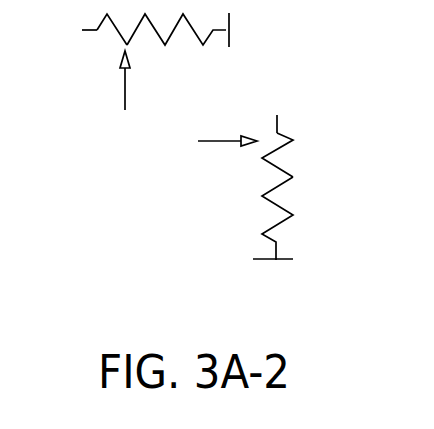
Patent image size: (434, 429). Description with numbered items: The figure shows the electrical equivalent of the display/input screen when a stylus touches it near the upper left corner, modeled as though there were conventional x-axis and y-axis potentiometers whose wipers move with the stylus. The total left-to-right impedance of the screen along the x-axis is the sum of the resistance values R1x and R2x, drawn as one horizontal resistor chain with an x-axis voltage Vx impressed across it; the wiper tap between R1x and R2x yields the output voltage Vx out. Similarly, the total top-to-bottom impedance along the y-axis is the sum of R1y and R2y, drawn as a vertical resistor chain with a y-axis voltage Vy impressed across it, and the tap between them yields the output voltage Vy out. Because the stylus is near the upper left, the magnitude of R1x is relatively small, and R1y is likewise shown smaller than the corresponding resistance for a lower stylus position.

The x-axis voltage Vx is at (74, 31).
The x-axis resistance R1x is at (97, 44).
The x-axis resistance R2x is at (178, 44).
The x-axis output voltage Vx out is at (89, 84).
The y-axis voltage Vy is at (272, 103).
The y-axis resistance R1y is at (300, 150).
The y-axis resistance R2y is at (296, 218).
The y-axis output voltage Vy out is at (206, 158).